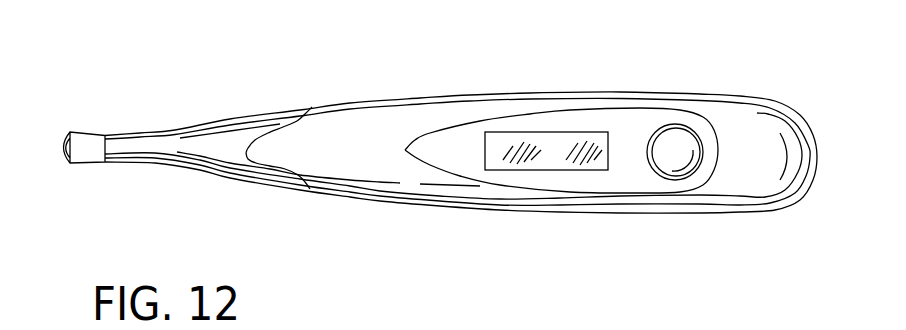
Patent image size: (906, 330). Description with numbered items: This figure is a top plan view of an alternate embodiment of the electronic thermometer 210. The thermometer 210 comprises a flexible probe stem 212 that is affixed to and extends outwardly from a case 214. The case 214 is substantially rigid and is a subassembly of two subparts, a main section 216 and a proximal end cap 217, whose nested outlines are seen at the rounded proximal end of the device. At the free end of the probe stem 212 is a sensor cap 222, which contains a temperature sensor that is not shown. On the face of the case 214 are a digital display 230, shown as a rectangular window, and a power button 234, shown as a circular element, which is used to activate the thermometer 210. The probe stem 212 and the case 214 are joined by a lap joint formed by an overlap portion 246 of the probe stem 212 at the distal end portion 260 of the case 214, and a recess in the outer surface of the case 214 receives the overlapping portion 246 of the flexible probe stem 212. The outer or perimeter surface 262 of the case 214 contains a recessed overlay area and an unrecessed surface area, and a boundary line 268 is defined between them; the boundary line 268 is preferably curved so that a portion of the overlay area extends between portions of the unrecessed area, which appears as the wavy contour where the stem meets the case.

The electronic thermometer 210 is at (368, 83).
The flexible probe stem 212 is at (167, 150).
The case 214 is at (651, 214).
The main section 216 is at (437, 200).
The proximal end cap 217 is at (742, 198).
The sensor cap 222 is at (83, 149).
The digital display 230 is at (562, 142).
The power button 234 is at (675, 142).
The overlap portion 246 is at (281, 176).
The distal end portion 260 is at (302, 152).
The outer surface 262 is at (426, 113).
The boundary line 268 is at (280, 118).